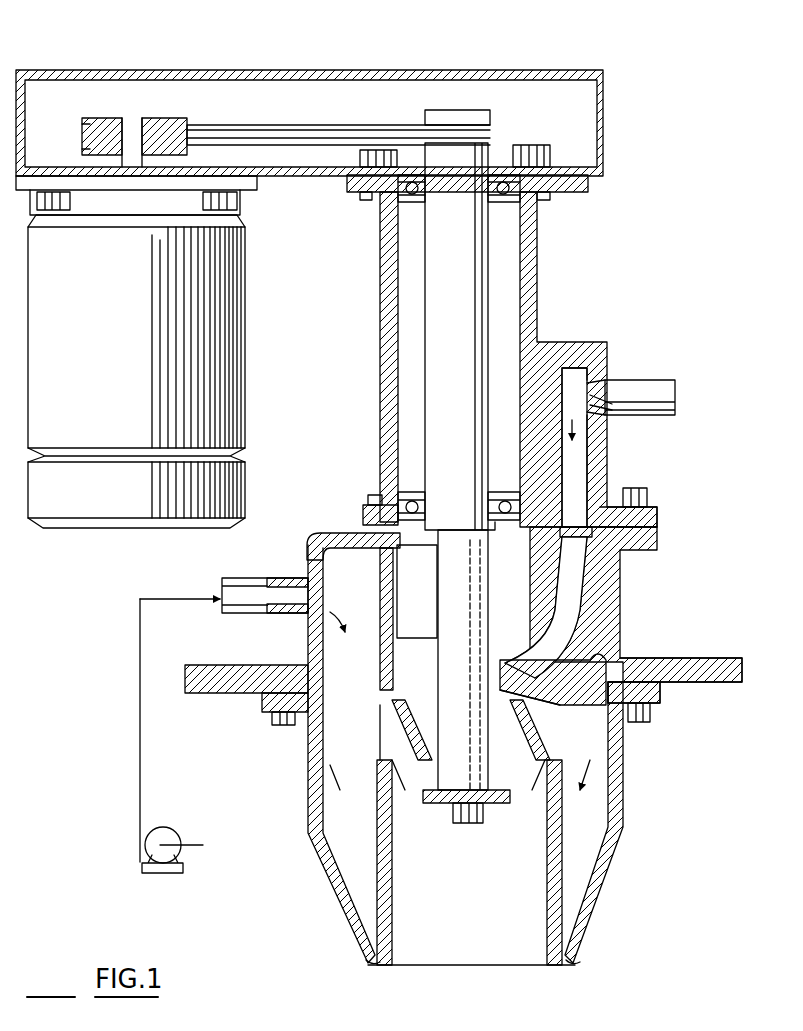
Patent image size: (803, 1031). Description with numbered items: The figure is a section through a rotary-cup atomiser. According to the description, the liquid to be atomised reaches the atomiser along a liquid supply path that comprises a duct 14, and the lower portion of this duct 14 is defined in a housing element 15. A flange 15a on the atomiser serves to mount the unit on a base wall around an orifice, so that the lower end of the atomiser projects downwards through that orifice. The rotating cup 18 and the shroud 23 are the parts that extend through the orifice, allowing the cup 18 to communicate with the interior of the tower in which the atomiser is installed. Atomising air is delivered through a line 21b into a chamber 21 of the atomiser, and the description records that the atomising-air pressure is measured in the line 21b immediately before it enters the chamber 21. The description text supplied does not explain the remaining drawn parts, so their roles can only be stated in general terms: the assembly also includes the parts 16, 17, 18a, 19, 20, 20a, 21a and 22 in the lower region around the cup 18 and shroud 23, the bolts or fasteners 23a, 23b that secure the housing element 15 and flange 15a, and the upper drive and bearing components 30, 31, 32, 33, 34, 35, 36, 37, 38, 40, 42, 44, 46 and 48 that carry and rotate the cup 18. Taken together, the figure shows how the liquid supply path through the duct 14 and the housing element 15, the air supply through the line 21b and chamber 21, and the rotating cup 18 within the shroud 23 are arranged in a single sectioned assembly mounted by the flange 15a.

The duct 14 is at (588, 480).
The housing element 15 is at (610, 610).
The flange 15a is at (694, 658).
The rotor disc 16 is at (520, 696).
The rotor hub 17 is at (520, 715).
The cup 18 is at (574, 874).
The retaining nut 18a is at (458, 826).
The deflector cones 19 is at (392, 742).
The drive shaft 20 is at (482, 598).
The shaft sleeve 20a is at (405, 638).
The chamber 21 is at (360, 652).
The pump 21a is at (170, 832).
The line 21b is at (248, 580).
The outlet openings 22 is at (366, 968).
The shroud 23 is at (570, 912).
The bolt 23a is at (660, 708).
The bolt 23b is at (272, 725).
The bearing housing 30 is at (540, 300).
The housing flange 31 is at (660, 508).
The upper bearing 32 is at (380, 238).
The flange bolt 33 is at (647, 488).
The hollow spindle 34 is at (425, 500).
The top plate 35 is at (588, 186).
The inlet pipe 36 is at (632, 384).
The bearing housing 37 is at (540, 205).
The belt housing 38 is at (603, 122).
The pulley 40 is at (492, 112).
The drive belt 42 is at (272, 125).
The coupling 44 is at (155, 118).
The motor 46 is at (118, 326).
The motor bracket 48 is at (240, 210).